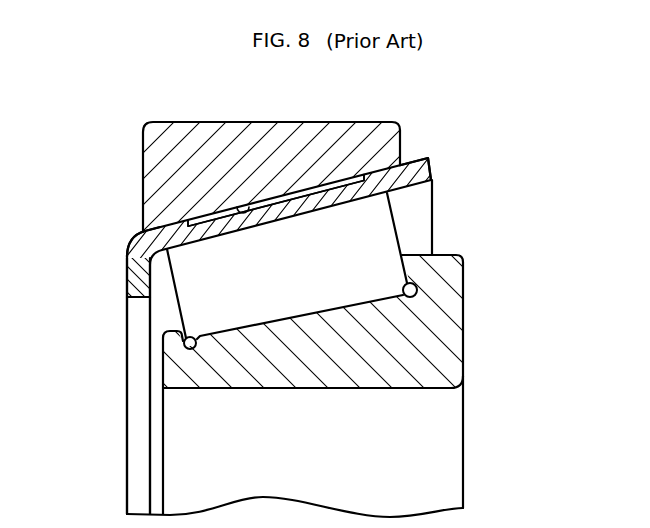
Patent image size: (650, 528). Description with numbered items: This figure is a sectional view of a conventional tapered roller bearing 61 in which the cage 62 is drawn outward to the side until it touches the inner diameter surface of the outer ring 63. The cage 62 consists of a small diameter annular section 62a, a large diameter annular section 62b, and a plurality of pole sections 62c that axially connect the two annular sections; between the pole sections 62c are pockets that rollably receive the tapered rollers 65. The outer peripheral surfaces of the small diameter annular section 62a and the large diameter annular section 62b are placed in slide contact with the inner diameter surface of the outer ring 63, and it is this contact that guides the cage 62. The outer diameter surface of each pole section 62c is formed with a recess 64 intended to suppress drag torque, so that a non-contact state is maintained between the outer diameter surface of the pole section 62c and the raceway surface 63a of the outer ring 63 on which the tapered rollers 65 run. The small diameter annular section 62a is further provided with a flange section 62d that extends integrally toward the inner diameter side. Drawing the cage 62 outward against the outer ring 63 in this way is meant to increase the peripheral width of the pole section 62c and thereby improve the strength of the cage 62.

The tapered roller bearing 61 is at (470, 101).
The cage 62 is at (430, 162).
The small diameter annular section 62a is at (142, 230).
The large diameter annular section 62b is at (412, 162).
The pole section 62c is at (228, 230).
The flange section 62d is at (131, 288).
The outer ring 63 is at (263, 130).
The raceway surface 63a is at (240, 208).
The recess 64 is at (319, 183).
The tapered roller 65 is at (360, 287).